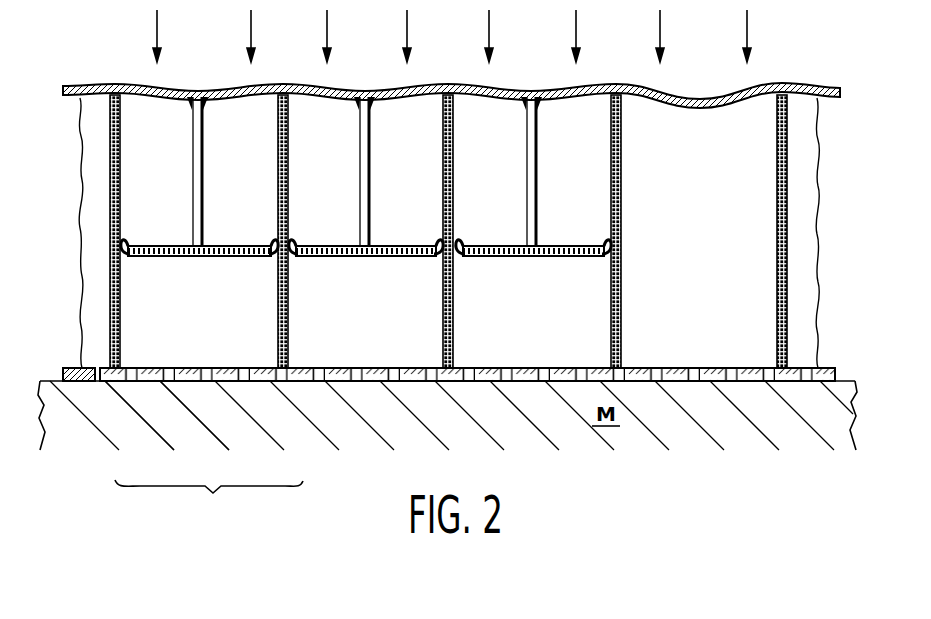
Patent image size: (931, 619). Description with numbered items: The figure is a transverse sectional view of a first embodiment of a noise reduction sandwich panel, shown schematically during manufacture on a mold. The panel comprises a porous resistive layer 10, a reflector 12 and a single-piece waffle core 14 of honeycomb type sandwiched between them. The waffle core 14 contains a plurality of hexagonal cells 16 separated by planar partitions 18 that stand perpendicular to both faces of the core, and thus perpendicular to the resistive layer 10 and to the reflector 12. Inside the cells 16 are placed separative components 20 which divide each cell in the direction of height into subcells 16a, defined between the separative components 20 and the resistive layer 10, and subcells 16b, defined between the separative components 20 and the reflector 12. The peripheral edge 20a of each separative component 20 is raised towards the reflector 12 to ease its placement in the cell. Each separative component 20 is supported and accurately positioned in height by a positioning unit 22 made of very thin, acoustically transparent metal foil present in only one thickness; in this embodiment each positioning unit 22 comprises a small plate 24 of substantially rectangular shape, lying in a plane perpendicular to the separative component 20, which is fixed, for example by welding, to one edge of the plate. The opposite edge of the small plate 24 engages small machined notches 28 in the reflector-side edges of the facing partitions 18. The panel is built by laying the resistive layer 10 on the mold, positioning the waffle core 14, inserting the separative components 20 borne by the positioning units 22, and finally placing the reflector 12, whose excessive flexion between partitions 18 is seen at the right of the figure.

The porous resistive layer 10 is at (77, 366).
The reflector 12 is at (96, 86).
The waffle core 14 is at (66, 182).
The cells 16 is at (209, 503).
The subcells 16a is at (160, 355).
The subcells 16b is at (178, 225).
The planar partitions 18 is at (453, 295).
The separative components 20 is at (266, 262).
The peripheral edge 20a is at (612, 249).
The positioning units 22 is at (350, 148).
The small plate 24 is at (530, 157).
The machined notches 28 is at (192, 97).